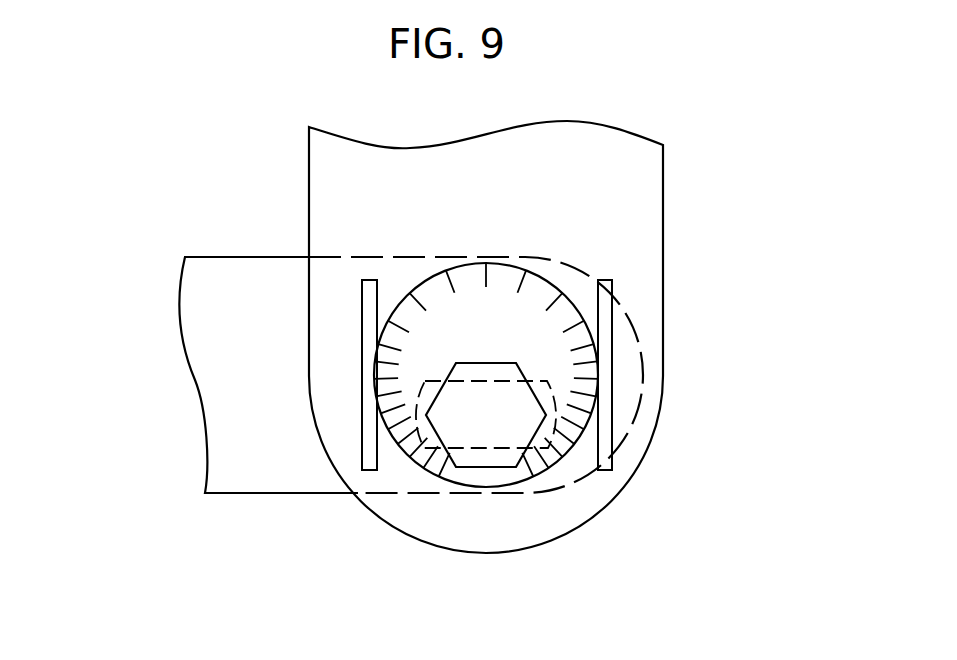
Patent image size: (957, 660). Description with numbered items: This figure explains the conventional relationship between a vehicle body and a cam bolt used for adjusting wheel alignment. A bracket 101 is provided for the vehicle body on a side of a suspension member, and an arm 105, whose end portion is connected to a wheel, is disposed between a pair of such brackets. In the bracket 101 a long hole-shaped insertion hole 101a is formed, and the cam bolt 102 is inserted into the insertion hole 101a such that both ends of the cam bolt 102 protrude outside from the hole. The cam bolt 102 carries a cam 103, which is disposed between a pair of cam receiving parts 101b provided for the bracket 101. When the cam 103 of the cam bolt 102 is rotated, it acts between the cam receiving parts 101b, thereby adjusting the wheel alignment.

The bracket 101 is at (628, 220).
The insertion hole 101a is at (555, 410).
The cam receiving part 101b is at (367, 325).
The cam bolt 102 is at (486, 435).
The cam 103 is at (465, 292).
The arm 105 is at (218, 415).